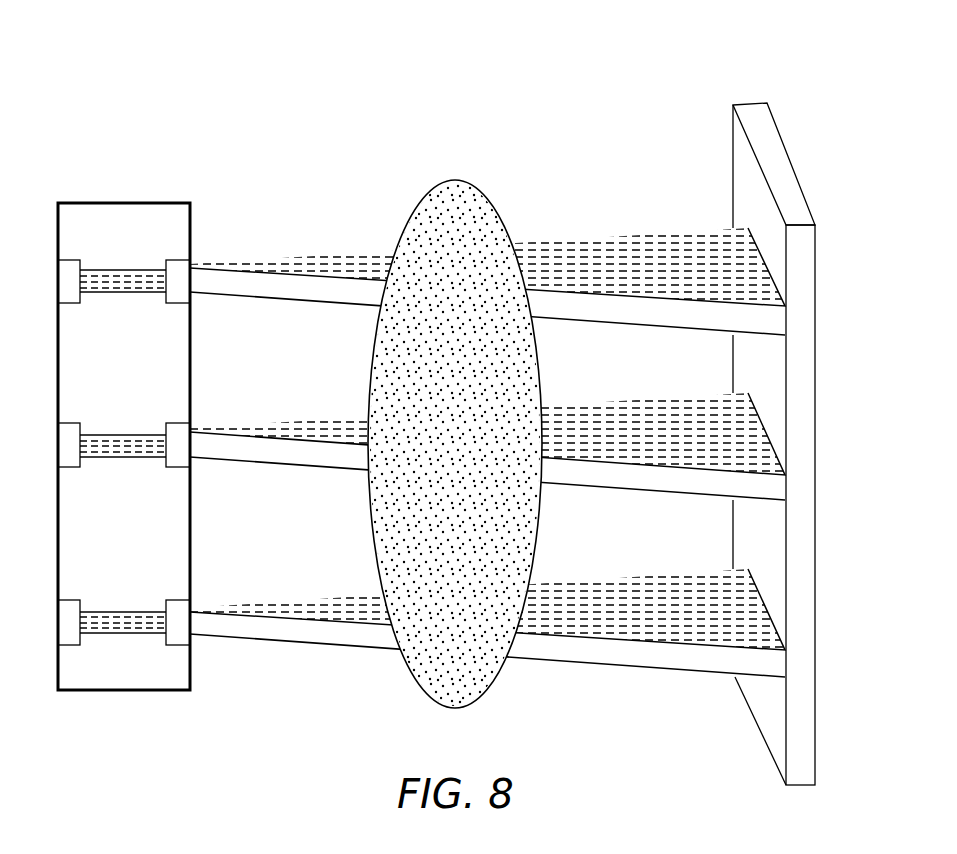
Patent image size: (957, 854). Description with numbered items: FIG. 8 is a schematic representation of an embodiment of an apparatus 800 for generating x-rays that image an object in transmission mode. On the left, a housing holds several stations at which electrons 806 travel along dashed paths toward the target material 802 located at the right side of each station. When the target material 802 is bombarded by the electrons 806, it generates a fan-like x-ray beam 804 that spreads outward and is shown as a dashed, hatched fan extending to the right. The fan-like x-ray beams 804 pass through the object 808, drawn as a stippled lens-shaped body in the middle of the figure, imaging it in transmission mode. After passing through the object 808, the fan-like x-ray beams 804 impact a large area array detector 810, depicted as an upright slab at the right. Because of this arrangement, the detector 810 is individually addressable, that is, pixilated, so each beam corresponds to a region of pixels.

The apparatus 800 is at (497, 362).
The target material 802 is at (173, 297).
The fan-like x-ray beam 804 is at (612, 570).
The electrons 806 is at (118, 275).
The object 808 is at (455, 192).
The large area array detector 810 is at (808, 350).